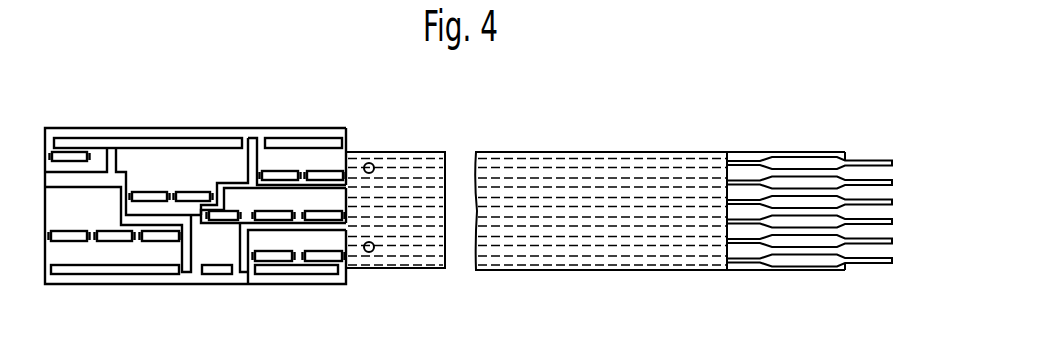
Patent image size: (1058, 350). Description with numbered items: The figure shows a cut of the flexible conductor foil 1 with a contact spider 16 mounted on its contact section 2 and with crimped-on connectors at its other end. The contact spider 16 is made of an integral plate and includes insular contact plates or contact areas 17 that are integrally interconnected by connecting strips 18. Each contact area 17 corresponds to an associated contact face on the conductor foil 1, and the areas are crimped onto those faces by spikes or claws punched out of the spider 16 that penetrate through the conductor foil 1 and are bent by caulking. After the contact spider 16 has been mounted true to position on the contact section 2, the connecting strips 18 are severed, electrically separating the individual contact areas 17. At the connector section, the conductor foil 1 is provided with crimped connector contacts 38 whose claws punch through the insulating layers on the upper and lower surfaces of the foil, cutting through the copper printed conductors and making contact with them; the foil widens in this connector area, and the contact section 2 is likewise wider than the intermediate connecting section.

The conductor foil 1 is at (533, 151).
The contact section 2 is at (270, 124).
The contact spider 16 is at (81, 128).
The contact areas 17 is at (184, 163).
The connecting strips 18 is at (150, 134).
The connector contacts 38 is at (786, 158).